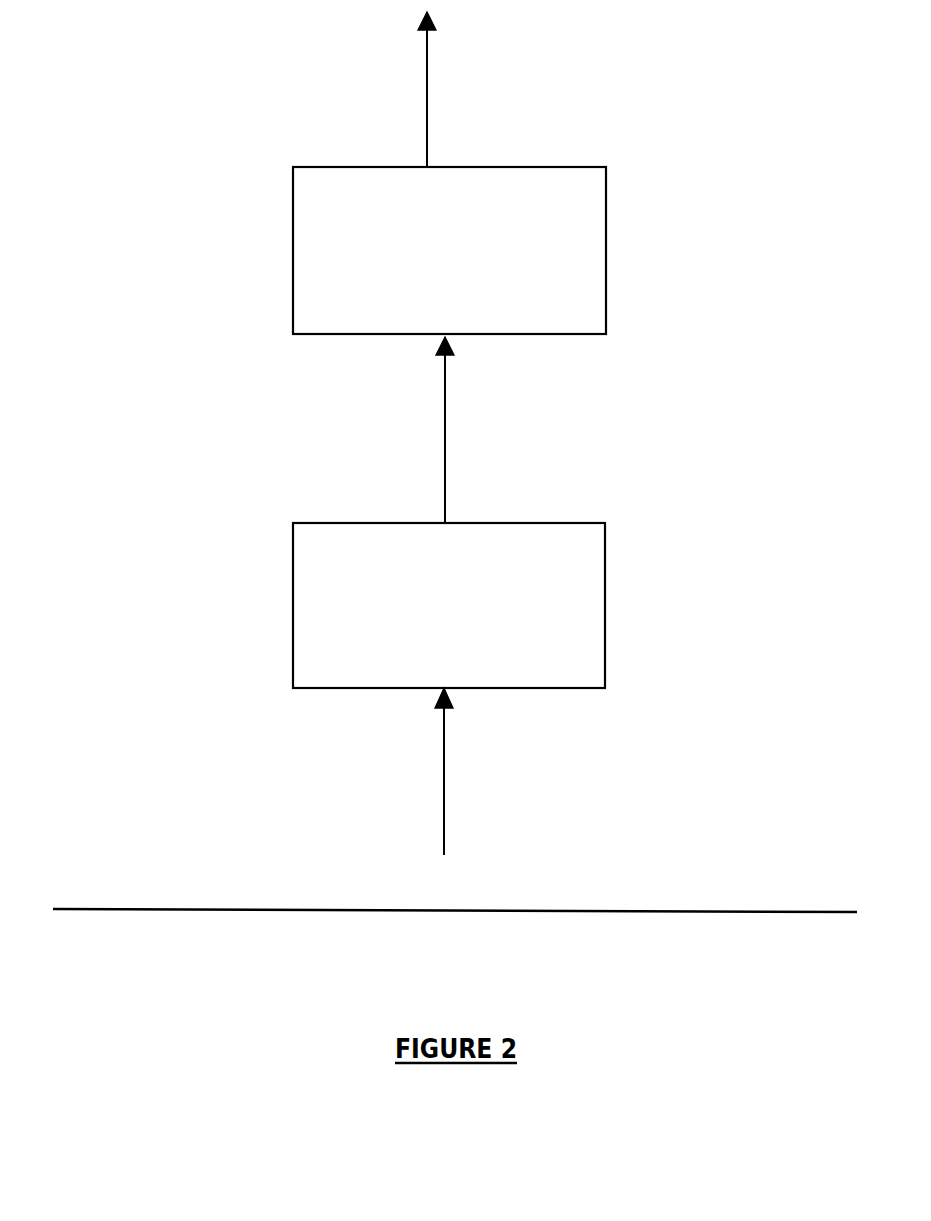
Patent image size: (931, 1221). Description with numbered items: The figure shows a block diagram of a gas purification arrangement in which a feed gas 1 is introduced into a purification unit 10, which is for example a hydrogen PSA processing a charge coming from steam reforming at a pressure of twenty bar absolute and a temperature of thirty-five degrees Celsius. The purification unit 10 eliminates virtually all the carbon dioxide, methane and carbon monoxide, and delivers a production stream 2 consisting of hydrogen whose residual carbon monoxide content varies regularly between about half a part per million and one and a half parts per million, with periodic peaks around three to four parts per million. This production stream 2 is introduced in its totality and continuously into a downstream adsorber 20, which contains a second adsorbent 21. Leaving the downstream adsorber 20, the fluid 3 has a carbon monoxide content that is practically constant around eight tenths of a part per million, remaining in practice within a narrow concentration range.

The feed gas 1 is at (440, 777).
The production stream 2 is at (445, 417).
The fluid 3 is at (426, 79).
The purification unit 10 is at (605, 623).
The downstream adsorber 20 is at (606, 257).
The second adsorbent 21 is at (332, 245).